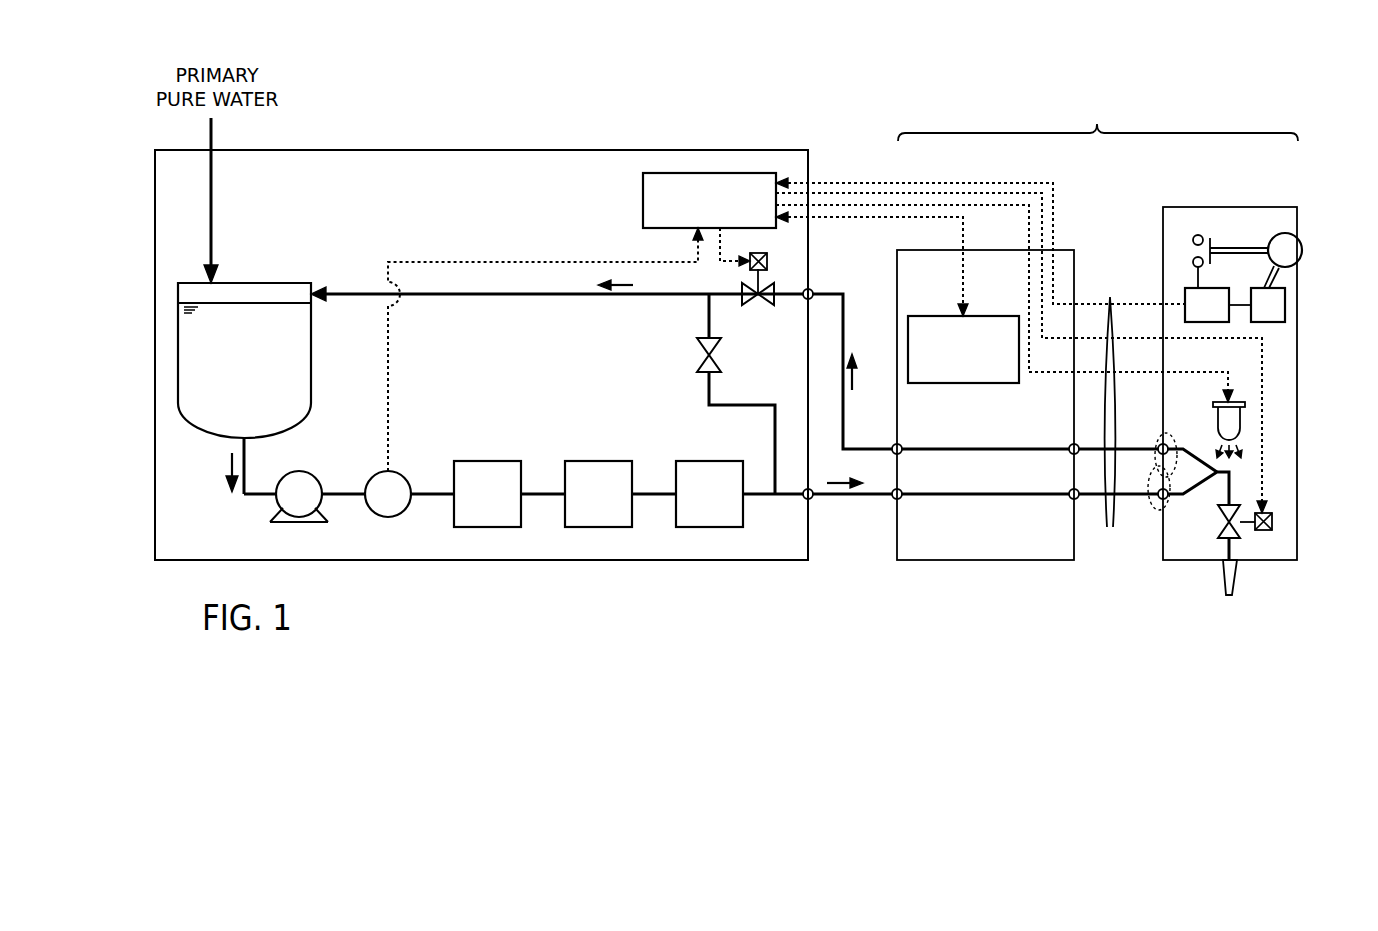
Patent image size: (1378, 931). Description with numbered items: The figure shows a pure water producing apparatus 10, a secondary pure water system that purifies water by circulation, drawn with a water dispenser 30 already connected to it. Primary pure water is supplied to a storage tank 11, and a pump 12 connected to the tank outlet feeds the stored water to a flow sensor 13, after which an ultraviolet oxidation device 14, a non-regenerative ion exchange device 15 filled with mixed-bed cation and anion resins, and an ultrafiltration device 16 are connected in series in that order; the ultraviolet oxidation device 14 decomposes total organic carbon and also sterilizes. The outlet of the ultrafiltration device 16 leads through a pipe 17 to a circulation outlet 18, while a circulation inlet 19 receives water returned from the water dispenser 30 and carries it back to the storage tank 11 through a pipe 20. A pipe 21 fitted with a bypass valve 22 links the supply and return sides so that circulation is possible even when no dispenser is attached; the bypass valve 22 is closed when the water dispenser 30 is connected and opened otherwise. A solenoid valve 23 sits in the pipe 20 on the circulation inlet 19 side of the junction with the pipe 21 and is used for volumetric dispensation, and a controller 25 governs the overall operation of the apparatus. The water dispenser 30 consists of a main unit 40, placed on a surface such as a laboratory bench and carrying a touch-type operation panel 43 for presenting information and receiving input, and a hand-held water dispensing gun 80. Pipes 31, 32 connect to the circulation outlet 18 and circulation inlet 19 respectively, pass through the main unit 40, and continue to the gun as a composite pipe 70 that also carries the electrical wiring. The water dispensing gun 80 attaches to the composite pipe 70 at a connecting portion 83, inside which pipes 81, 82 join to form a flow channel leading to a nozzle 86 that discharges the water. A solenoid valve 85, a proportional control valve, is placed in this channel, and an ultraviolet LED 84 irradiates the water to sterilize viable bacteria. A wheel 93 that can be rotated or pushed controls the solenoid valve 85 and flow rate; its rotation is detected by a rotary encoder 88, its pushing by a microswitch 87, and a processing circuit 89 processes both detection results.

The pure water producing apparatus 10 is at (734, 150).
The storage tank 11 is at (289, 282).
The pump 12 is at (308, 477).
The flow sensor 13 is at (392, 475).
The ultraviolet oxidation device 14 is at (488, 461).
The non-regenerative ion exchange device 15 is at (600, 461).
The ultrafiltration device 16 is at (722, 461).
The pipe 17 is at (763, 497).
The circulation outlet 18 is at (812, 498).
The circulation inlet 19 is at (811, 290).
The pipe 20 is at (545, 297).
The pipe 21 is at (758, 404).
The bypass valve 22 is at (700, 346).
The solenoid valve 23 is at (750, 302).
The controller 25 is at (643, 190).
The water dispenser 30 is at (1098, 116).
The pipe 31 is at (875, 497).
The pipe 32 is at (863, 447).
The main unit 40 is at (1071, 250).
The operation panel 43 is at (992, 316).
The composite pipe 70 is at (1109, 510).
The water dispensing gun 80 is at (1178, 212).
The pipe 81 is at (1175, 498).
The pipe 82 is at (1176, 447).
The connecting portion 83 is at (1156, 505).
The ultraviolet LED 84 is at (1213, 403).
The solenoid valve 85 is at (1238, 530).
The nozzle 86 is at (1224, 582).
The microswitch 87 is at (1205, 228).
The rotary encoder 88 is at (1287, 312).
The processing circuit 89 is at (1185, 298).
The wheel 93 is at (1302, 250).